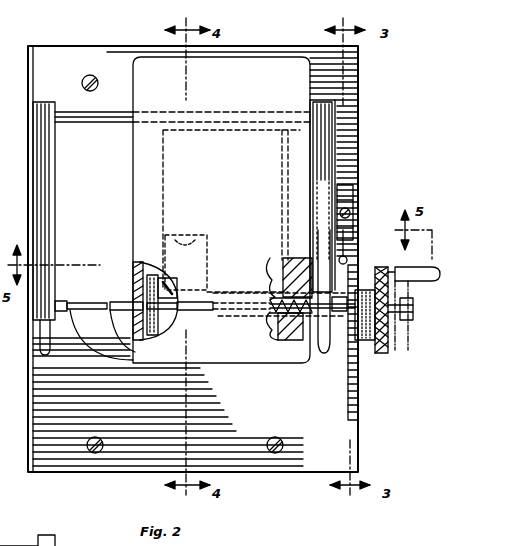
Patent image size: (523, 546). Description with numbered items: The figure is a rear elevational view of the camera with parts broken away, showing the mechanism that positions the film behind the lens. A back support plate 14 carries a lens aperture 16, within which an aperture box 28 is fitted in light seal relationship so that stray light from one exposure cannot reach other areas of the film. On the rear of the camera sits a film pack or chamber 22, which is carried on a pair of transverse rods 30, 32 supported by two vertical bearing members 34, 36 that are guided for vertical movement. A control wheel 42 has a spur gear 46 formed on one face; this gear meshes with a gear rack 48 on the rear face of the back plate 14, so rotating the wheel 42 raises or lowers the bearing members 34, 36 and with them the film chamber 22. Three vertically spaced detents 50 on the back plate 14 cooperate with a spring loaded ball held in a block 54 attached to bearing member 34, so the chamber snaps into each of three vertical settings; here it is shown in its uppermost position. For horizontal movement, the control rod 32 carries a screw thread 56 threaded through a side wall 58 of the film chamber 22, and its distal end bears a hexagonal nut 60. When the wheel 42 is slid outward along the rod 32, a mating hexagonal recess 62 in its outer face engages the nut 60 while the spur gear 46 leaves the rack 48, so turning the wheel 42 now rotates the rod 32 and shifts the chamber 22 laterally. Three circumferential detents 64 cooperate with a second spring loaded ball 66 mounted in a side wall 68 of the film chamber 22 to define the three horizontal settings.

The back support plate 14 is at (85, 62).
The film pack 22 is at (230, 80).
The transverse rod 30 is at (118, 125).
The vertical bearing member 34 is at (50, 215).
The vertical bearing member 36 is at (325, 155).
The block 54 is at (348, 196).
The detent 50 is at (358, 242).
The spur gear 46 is at (347, 258).
The lens aperture 16 is at (192, 232).
The aperture box 28 is at (234, 240).
The side wall 58 is at (283, 270).
The screw thread 56 is at (265, 333).
The spring loaded ball 66 is at (135, 268).
The side wall 68 is at (138, 262).
The control rod 32 is at (128, 303).
The circumferential detent 64 is at (135, 352).
The hexagonal nut 60 is at (413, 309).
The control wheel 42 is at (380, 353).
The hexagonal recess 62 is at (364, 355).
The gear rack 48 is at (347, 408).